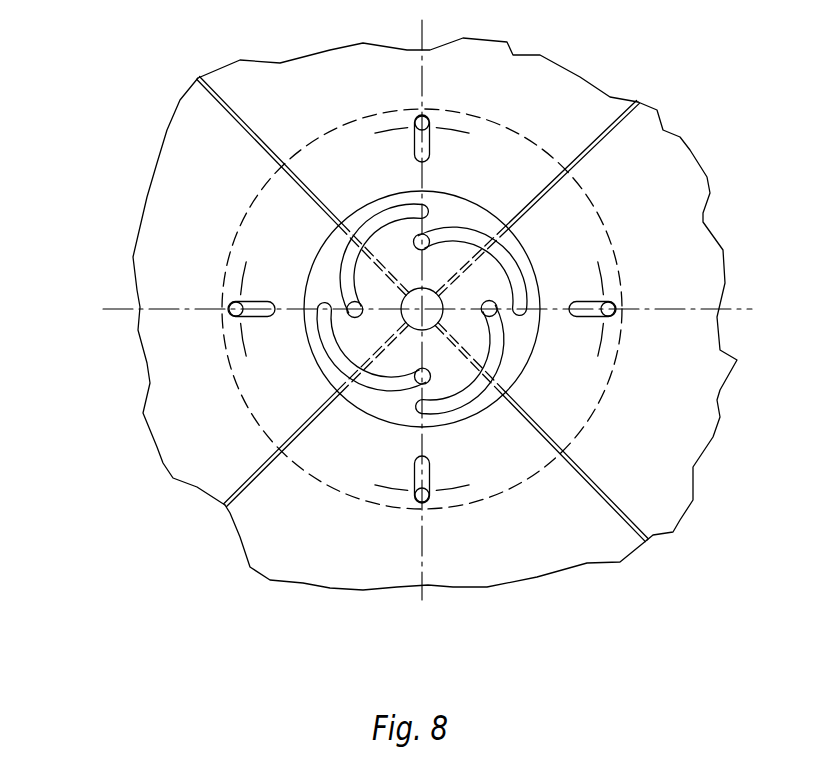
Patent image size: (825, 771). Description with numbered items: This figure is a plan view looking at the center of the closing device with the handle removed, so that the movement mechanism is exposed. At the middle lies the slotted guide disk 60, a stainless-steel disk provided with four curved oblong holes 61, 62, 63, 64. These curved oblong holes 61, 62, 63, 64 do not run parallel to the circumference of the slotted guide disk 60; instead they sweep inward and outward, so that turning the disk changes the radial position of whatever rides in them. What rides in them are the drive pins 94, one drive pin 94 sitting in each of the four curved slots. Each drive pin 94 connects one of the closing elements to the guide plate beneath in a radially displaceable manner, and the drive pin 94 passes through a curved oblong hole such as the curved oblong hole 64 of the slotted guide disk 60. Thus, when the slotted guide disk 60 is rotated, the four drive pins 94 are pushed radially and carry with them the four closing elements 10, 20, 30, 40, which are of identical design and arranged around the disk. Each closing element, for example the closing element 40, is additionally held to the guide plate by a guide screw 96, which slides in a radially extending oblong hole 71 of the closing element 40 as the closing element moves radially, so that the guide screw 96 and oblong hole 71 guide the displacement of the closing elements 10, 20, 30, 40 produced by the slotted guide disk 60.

The closing element 10 is at (700, 400).
The closing element 20 is at (583, 550).
The closing element 30 is at (170, 390).
The closing element 40 is at (303, 80).
The slotted guide disk 60 is at (511, 258).
The curved oblong hole 61 is at (448, 392).
The curved oblong hole 62 is at (342, 336).
The curved oblong hole 63 is at (393, 224).
The curved oblong hole 64 is at (536, 271).
The oblong hole 71 is at (431, 142).
The drive pin 94 is at (431, 241).
The guide screw 96 is at (427, 116).